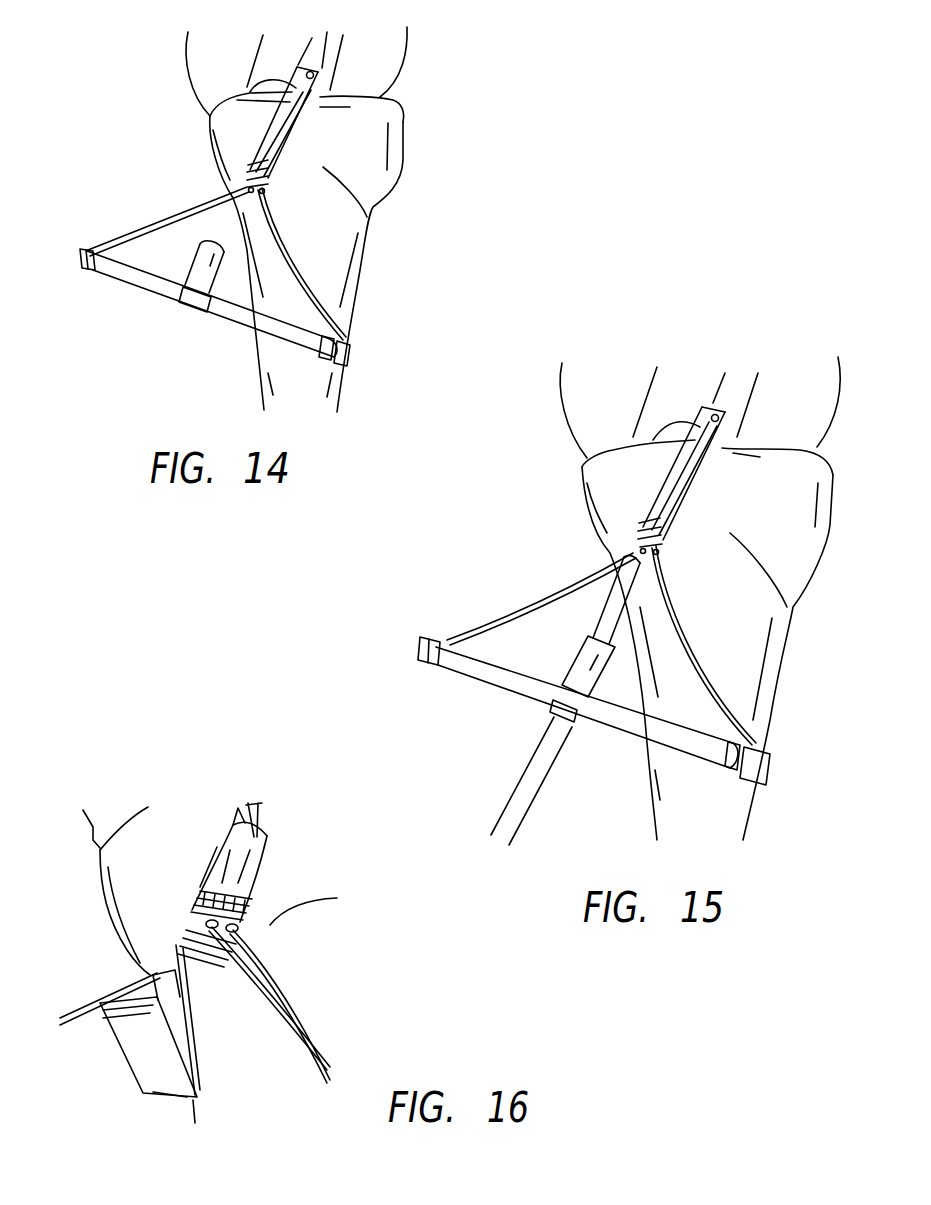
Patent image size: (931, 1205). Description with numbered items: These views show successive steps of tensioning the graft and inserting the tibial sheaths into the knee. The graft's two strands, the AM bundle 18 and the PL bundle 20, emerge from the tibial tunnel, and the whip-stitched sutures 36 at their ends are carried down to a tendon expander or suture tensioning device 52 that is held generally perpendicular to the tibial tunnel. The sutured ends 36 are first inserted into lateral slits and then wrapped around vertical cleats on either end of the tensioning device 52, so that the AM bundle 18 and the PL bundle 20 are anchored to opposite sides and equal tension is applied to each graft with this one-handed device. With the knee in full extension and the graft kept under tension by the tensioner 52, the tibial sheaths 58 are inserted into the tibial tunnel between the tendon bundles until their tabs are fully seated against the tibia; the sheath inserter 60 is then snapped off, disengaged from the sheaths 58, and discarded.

In FIG. 14, the AM bundle 18 is at (330, 94).
In FIG. 14, the PL bundle 20 is at (337, 93).
In FIG. 14, the sutures 36 is at (307, 280).
In FIG. 14, the suture tensioning device 52 is at (132, 281).
In FIG. 15, the suture tensioning device 52 is at (480, 677).
In FIG. 16, the tibial sheaths 58 is at (188, 917).
In FIG. 16, the sheath inserter 60 is at (137, 1053).